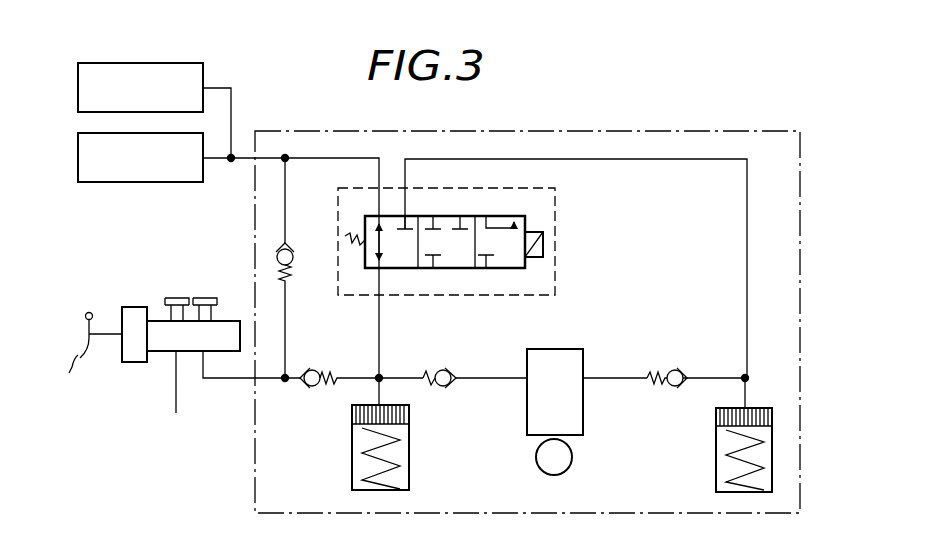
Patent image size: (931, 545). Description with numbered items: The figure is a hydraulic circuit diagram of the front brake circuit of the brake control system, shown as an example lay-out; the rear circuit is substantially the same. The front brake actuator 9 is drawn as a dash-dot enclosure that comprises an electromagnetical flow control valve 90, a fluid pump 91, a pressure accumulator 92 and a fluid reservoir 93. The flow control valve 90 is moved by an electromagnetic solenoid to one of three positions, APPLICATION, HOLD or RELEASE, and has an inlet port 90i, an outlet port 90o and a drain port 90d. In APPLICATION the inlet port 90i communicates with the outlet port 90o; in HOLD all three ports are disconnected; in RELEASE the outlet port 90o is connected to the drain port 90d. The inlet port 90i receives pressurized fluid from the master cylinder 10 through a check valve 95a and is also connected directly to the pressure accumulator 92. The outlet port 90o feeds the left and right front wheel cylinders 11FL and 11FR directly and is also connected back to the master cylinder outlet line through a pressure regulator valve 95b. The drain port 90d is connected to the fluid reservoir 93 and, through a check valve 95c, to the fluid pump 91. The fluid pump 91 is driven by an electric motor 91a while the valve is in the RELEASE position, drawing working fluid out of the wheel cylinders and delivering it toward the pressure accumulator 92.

The front brake actuator 9 is at (566, 128).
The master cylinder 10 is at (137, 307).
The left front wheel cylinder 11FL is at (113, 63).
The right front wheel cylinder 11FR is at (113, 182).
The electromagnetical flow control valve 90 is at (555, 245).
The outlet port 90o is at (382, 210).
The drain port 90d is at (407, 214).
The inlet port 90i is at (380, 270).
The fluid pump 91 is at (563, 349).
The electric motor 91a is at (572, 463).
The pressure accumulator 92 is at (352, 441).
The fluid reservoir 93 is at (716, 440).
The check valve 95a is at (321, 354).
The pressure regulator valve 95b is at (312, 228).
The check valve 95c is at (680, 370).